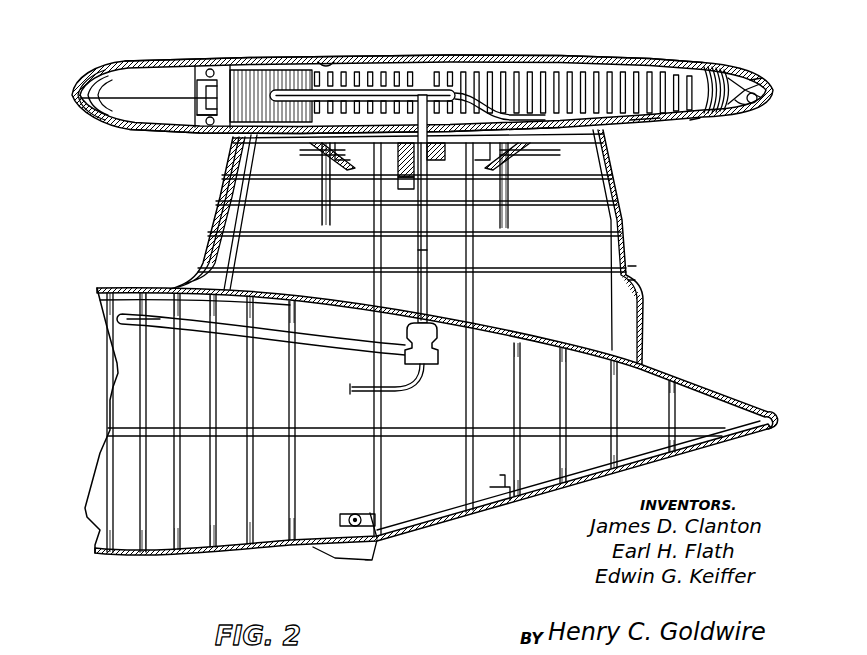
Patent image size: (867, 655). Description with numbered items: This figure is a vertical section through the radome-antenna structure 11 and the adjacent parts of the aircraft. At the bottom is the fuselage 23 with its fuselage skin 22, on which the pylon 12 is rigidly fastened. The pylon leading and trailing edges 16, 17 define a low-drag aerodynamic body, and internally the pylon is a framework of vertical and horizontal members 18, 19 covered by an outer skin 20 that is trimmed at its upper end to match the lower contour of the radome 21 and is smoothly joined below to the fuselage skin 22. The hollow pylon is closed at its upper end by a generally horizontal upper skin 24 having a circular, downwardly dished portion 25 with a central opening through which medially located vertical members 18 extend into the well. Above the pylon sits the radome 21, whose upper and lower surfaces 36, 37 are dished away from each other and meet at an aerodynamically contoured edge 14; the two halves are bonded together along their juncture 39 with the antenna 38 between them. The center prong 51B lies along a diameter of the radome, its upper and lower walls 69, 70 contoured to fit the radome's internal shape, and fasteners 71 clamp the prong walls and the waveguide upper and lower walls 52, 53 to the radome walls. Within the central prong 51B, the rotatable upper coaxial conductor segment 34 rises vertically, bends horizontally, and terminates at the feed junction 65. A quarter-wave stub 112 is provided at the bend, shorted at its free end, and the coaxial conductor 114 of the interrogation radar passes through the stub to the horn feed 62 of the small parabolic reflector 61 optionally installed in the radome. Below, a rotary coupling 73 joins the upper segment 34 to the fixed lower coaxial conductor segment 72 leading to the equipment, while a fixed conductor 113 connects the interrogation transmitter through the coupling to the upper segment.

The fin tip pod assembly 11 is at (352, 38).
The pylon 12 is at (623, 209).
The edge of the radome 14 is at (72, 97).
The pylon leading edge 16 is at (203, 254).
The pylon trailing edge 17 is at (627, 248).
The vertical members 18 is at (465, 478).
The horizontal members 19 is at (313, 228).
The outer skin 20 is at (213, 229).
The radome 21 is at (573, 56).
The fuselage skin 22 is at (116, 288).
The fuselage 23 is at (116, 387).
The upper skin 24 is at (568, 176).
The dished portion 25 is at (527, 158).
The upper coaxial conductor segment 34 is at (430, 255).
The upper surface of the radome 36 is at (151, 62).
The lower surface of the radome 37 is at (123, 128).
The antenna 38 is at (193, 117).
The juncture 39 is at (120, 100).
The center prong 51B is at (505, 70).
The waveguide upper wall 52 is at (200, 66).
The waveguide lower wall 53 is at (202, 122).
The parabolic reflector 61 is at (757, 75).
The horn feed 62 is at (753, 82).
The feed junction 65 is at (342, 96).
The upper walls of the prongs 69 is at (452, 62).
The lower walls of the prongs 70 is at (648, 118).
The fasteners 71 is at (330, 66).
The lower coaxial conductor segment 72 is at (125, 322).
The rotary coupling 73 is at (440, 364).
The quarter-wave stub 112 is at (452, 89).
The fixed conductor 113 is at (361, 388).
The coaxial conductor of the interrogation radar 114 is at (741, 108).